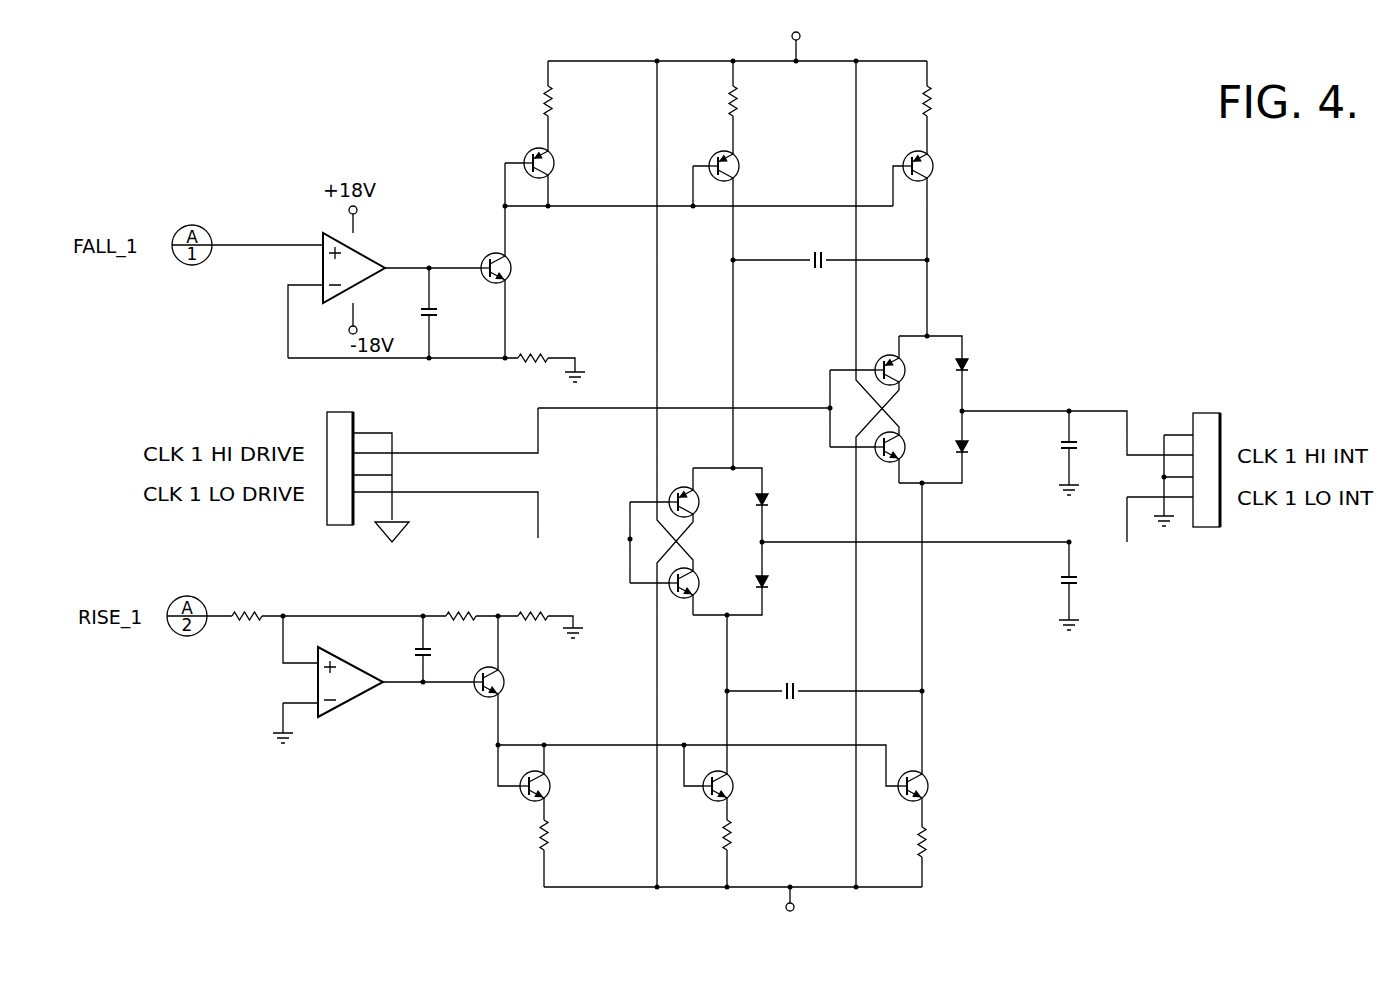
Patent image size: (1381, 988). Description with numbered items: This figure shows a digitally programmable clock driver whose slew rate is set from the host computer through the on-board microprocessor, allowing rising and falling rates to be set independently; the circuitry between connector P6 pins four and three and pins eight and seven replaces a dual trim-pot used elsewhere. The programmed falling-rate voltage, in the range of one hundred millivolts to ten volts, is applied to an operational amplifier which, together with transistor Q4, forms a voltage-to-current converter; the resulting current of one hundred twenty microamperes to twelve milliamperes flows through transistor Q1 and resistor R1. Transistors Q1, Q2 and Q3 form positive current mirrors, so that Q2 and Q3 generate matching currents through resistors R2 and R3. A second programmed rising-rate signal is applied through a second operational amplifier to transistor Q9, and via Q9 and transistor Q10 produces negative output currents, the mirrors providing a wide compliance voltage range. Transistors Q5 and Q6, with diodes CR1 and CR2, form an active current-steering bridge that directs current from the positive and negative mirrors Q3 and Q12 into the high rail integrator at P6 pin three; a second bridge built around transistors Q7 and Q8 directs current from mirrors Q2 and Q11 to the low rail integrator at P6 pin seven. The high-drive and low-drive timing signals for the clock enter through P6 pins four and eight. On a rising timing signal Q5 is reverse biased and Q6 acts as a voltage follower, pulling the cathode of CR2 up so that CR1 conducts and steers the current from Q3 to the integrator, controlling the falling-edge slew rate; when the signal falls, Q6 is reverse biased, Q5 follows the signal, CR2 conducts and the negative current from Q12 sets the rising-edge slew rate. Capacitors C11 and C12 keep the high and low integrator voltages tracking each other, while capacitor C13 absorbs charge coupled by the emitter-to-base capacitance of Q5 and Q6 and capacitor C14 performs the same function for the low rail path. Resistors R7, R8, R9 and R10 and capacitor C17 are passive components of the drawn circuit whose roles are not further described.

The resistor R1 is at (564, 101).
The resistor R2 is at (748, 101).
The resistor R3 is at (942, 101).
The resistor R7 is at (533, 344).
The resistor R8 is at (247, 601).
The resistor R9 is at (461, 600).
The resistor R10 is at (531, 600).
The transistor Q1 is at (554, 163).
The transistor Q2 is at (740, 166).
The transistor Q3 is at (938, 166).
The transistor Q4 is at (511, 268).
The transistor Q5 is at (904, 370).
The transistor Q6 is at (904, 447).
The transistor Q7 is at (701, 502).
The transistor Q8 is at (701, 583).
The transistor Q9 is at (506, 682).
The transistor Q10 is at (560, 786).
The transistor Q11 is at (738, 786).
The transistor Q12 is at (934, 786).
The capacitor C11 is at (818, 248).
The capacitor C12 is at (788, 676).
The capacitor C13 is at (1090, 445).
The capacitor C14 is at (1090, 581).
The capacitor C17 is at (449, 312).
The diode CR1 is at (987, 366).
The diode CR2 is at (985, 448).
The connector P6 is at (773, 456).